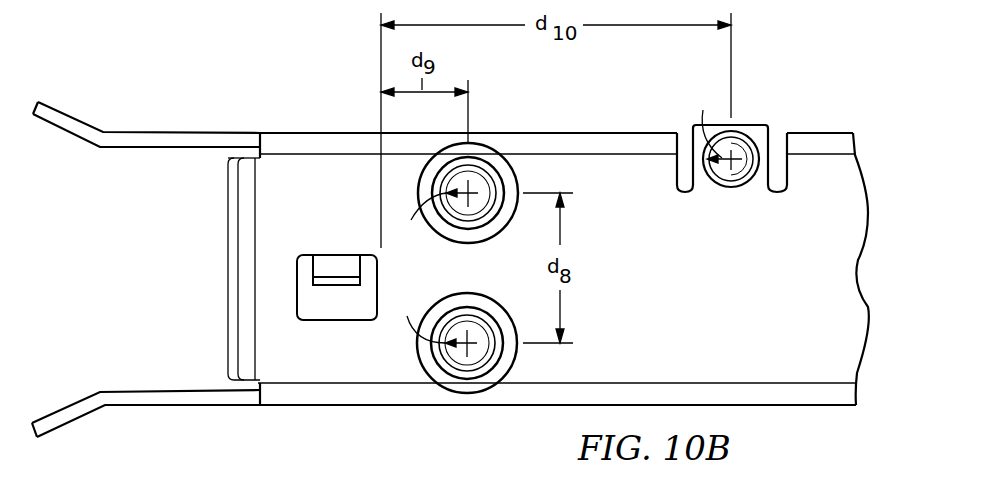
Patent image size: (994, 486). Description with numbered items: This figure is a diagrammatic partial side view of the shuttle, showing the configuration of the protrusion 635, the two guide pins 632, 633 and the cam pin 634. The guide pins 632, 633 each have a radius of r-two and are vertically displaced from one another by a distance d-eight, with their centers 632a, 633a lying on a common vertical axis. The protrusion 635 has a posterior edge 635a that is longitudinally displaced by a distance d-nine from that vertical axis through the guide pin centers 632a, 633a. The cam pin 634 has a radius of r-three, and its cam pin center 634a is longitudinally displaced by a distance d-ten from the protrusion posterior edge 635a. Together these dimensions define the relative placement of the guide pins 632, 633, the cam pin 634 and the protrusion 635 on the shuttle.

The guide pin 632 is at (498, 344).
The center of guide pin 632a is at (484, 357).
The guide pin 633 is at (496, 181).
The center of guide pin 633a is at (480, 205).
The cam pin 634 is at (750, 137).
The cam pin center 634a is at (738, 167).
The protrusion 635 is at (340, 263).
The posterior edge of protrusion 635a is at (376, 300).